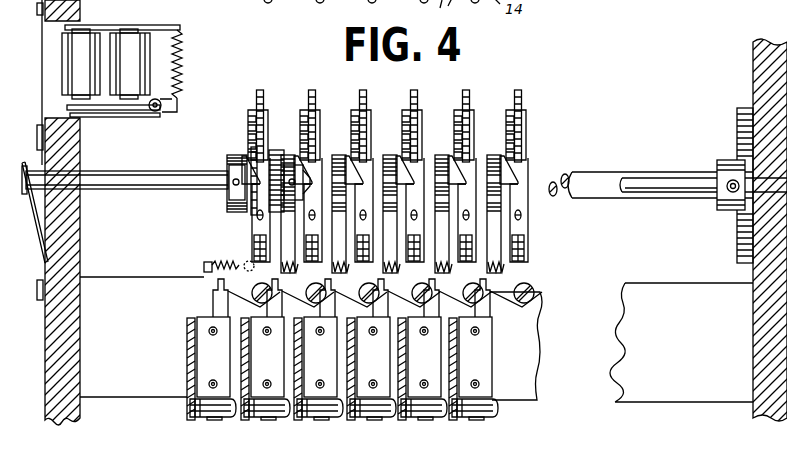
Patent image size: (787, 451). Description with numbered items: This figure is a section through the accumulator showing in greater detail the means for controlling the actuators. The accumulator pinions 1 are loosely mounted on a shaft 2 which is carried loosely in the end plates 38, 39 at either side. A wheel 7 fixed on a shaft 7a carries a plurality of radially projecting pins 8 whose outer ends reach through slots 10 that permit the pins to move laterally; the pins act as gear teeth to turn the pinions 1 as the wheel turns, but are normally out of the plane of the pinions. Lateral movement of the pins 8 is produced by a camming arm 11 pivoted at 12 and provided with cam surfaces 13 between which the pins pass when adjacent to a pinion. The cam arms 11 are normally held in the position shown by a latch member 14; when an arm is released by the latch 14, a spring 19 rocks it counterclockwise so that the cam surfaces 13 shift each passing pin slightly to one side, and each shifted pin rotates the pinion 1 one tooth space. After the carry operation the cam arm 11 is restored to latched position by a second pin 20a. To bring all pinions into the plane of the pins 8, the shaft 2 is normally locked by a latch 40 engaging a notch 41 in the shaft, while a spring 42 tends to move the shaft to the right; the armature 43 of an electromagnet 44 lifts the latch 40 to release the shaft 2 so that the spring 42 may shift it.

The accumulator pinion 1 is at (248, 213).
The shaft 2 is at (170, 178).
The wheel 7 is at (528, 142).
The shaft 7a is at (600, 175).
The pins 8 is at (522, 95).
The slots 10 is at (510, 143).
The camming arm 11 is at (536, 247).
The pivot 12 is at (537, 293).
The cam surfaces 13 is at (532, 160).
The latch member 14 is at (483, 315).
The spring 19 is at (225, 262).
The second pin 20a is at (522, 215).
The end plate 38 is at (78, 235).
The end plate 39 is at (752, 296).
The latch 40 is at (42, 156).
The notch 41 is at (38, 222).
The spring 42 is at (42, 258).
The armature 43 is at (103, 117).
The electromagnet 44 is at (86, 50).